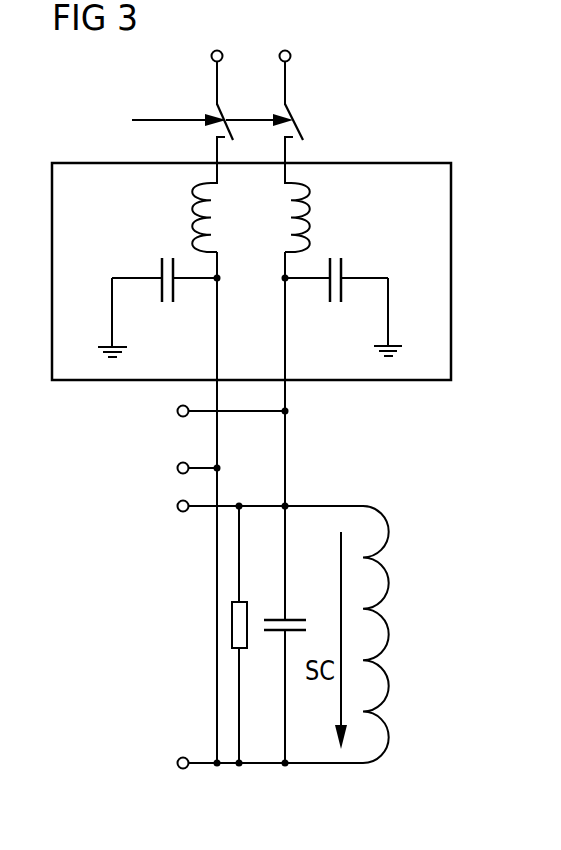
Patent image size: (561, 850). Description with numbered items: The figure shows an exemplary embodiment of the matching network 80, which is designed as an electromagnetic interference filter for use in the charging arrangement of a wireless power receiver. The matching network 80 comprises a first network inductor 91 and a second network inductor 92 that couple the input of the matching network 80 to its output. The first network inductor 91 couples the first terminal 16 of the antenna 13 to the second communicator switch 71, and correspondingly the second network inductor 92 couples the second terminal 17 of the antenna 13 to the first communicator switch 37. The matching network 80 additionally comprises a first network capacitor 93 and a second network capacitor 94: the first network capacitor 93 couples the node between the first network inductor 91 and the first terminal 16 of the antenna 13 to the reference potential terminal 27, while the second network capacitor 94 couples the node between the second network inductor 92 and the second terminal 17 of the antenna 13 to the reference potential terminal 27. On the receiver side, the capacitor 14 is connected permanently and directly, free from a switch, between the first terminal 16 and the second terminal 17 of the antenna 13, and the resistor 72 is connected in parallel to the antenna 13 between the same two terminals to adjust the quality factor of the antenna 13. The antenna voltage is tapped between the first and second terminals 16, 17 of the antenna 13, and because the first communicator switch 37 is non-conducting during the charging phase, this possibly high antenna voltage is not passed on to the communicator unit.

The antenna 13 is at (389, 521).
The capacitor 14 is at (293, 618).
The first terminal of the antenna 16 is at (285, 768).
The second terminal of the antenna 17 is at (287, 504).
The reference potential terminal 27 is at (109, 343).
The first communicator switch 37 is at (304, 122).
The second communicator switch 71 is at (213, 108).
The resistor 72 is at (239, 601).
The matching network 80 is at (412, 163).
The first network inductor 91 is at (193, 212).
The second network inductor 92 is at (308, 212).
The first network capacitor 93 is at (159, 269).
The second network capacitor 94 is at (344, 268).